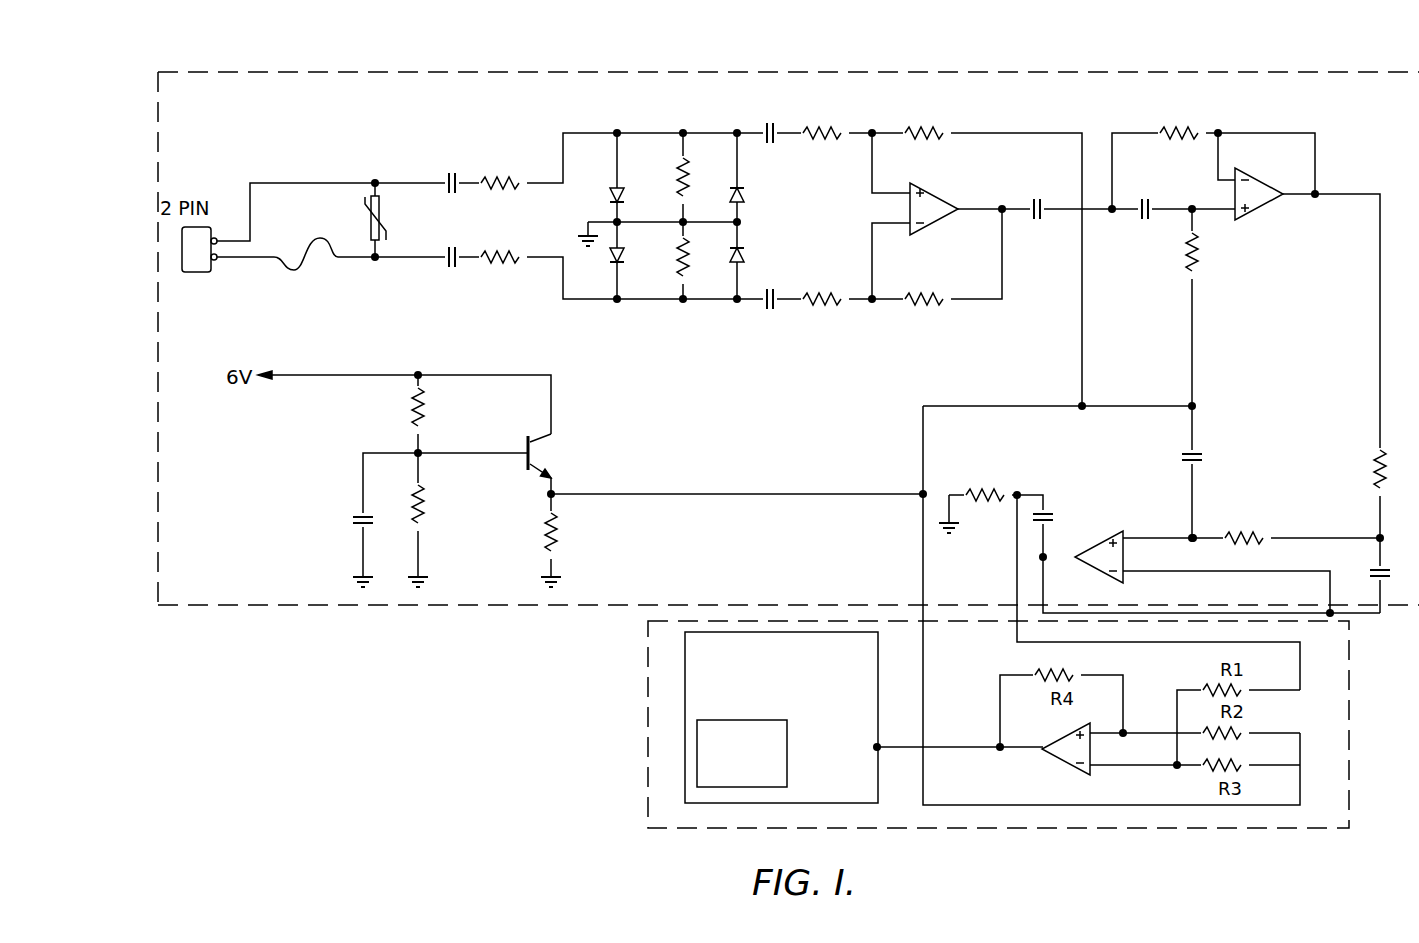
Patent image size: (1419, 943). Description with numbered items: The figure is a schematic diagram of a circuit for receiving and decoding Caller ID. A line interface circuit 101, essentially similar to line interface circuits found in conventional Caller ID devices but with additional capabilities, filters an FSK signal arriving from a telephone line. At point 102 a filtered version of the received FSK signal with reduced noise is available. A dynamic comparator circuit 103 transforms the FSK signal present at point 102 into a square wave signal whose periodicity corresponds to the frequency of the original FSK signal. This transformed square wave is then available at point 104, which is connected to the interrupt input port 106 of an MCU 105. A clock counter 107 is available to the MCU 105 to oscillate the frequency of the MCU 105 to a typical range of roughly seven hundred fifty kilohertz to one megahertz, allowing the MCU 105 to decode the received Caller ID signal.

The line interface circuit 101 is at (1052, 72).
The point 102 is at (1043, 585).
The dynamic comparator circuit 103 is at (1349, 826).
The point 104 is at (1002, 752).
The MCU 105 is at (888, 646).
The interrupt input port 106 is at (875, 744).
The clock counter 107 is at (765, 720).